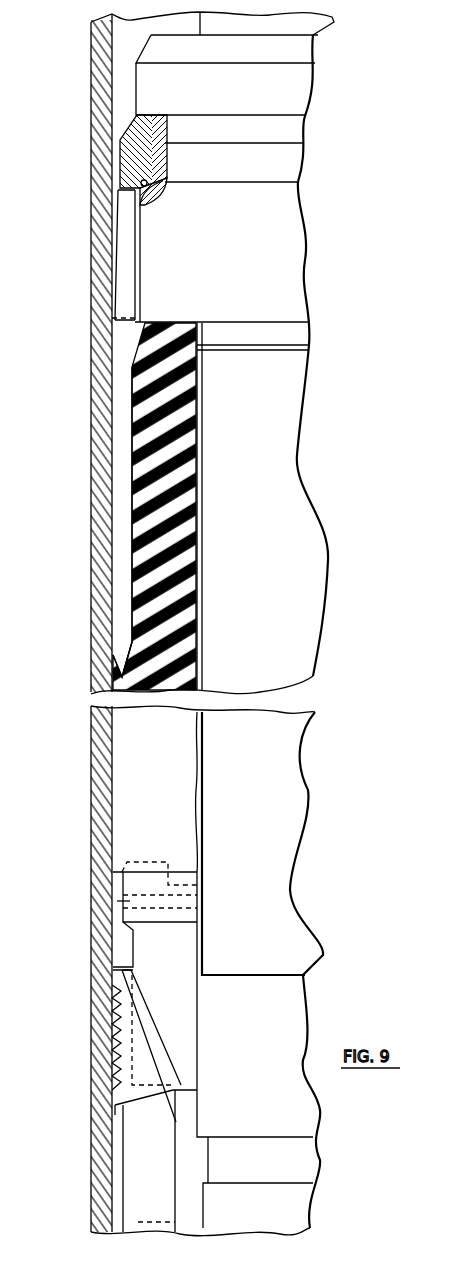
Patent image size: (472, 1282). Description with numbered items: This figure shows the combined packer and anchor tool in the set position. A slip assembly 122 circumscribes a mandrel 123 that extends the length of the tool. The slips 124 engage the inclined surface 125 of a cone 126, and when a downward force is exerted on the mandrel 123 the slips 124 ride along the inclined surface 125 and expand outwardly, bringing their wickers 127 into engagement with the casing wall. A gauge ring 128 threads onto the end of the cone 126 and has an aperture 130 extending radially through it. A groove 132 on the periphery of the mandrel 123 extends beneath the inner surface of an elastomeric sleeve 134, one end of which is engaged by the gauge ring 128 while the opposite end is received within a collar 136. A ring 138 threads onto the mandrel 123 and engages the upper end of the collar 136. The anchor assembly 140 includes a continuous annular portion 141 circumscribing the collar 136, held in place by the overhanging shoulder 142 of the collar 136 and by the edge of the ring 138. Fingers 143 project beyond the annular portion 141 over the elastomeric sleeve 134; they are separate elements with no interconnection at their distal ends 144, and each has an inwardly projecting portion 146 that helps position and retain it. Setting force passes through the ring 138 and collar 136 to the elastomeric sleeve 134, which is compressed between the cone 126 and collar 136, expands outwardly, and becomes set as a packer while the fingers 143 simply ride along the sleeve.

The slip assembly 122 is at (121, 1157).
The mandrel 123 is at (274, 797).
The slips 124 is at (160, 1188).
The inclined surface 125 is at (116, 969).
The cone 126 is at (190, 1027).
The wickers 127 is at (113, 1020).
The gauge ring 128 is at (118, 912).
The aperture 130 is at (114, 900).
The groove 132 is at (198, 447).
The elastomeric sleeve 134 is at (192, 576).
The collar 136 is at (280, 262).
The ring 138 is at (275, 96).
The anchor assembly 140 is at (112, 243).
The continuous annular portion 141 is at (128, 136).
The overhanging shoulder 142 is at (147, 182).
The fingers 143 is at (118, 491).
The distal ends 144 is at (122, 663).
The inwardly projecting portion 146 is at (137, 342).